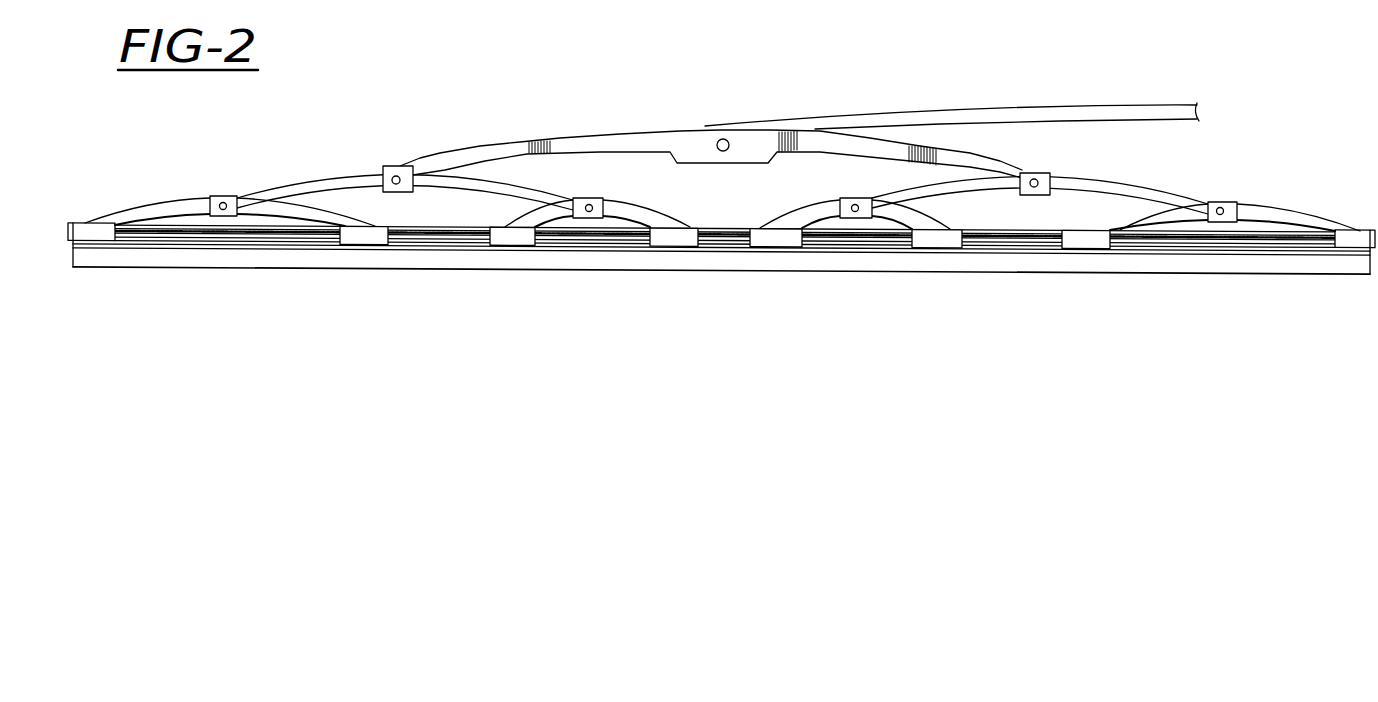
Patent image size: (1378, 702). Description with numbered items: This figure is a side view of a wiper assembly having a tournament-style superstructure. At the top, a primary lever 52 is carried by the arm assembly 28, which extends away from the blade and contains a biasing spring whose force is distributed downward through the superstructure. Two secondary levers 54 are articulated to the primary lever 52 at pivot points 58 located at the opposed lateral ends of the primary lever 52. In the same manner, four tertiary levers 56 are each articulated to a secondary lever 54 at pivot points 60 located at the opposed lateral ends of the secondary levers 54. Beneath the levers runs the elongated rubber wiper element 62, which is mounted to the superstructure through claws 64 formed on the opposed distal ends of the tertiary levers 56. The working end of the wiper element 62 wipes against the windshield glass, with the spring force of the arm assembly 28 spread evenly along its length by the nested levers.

The arm assembly 28 is at (1107, 107).
The primary lever 52 is at (579, 138).
The secondary lever 54 is at (337, 185).
The tertiary lever 56 is at (153, 207).
The pivot point 58 is at (400, 176).
The pivot point 60 is at (224, 203).
The wiper element 62 is at (688, 262).
The claw 64 is at (364, 233).